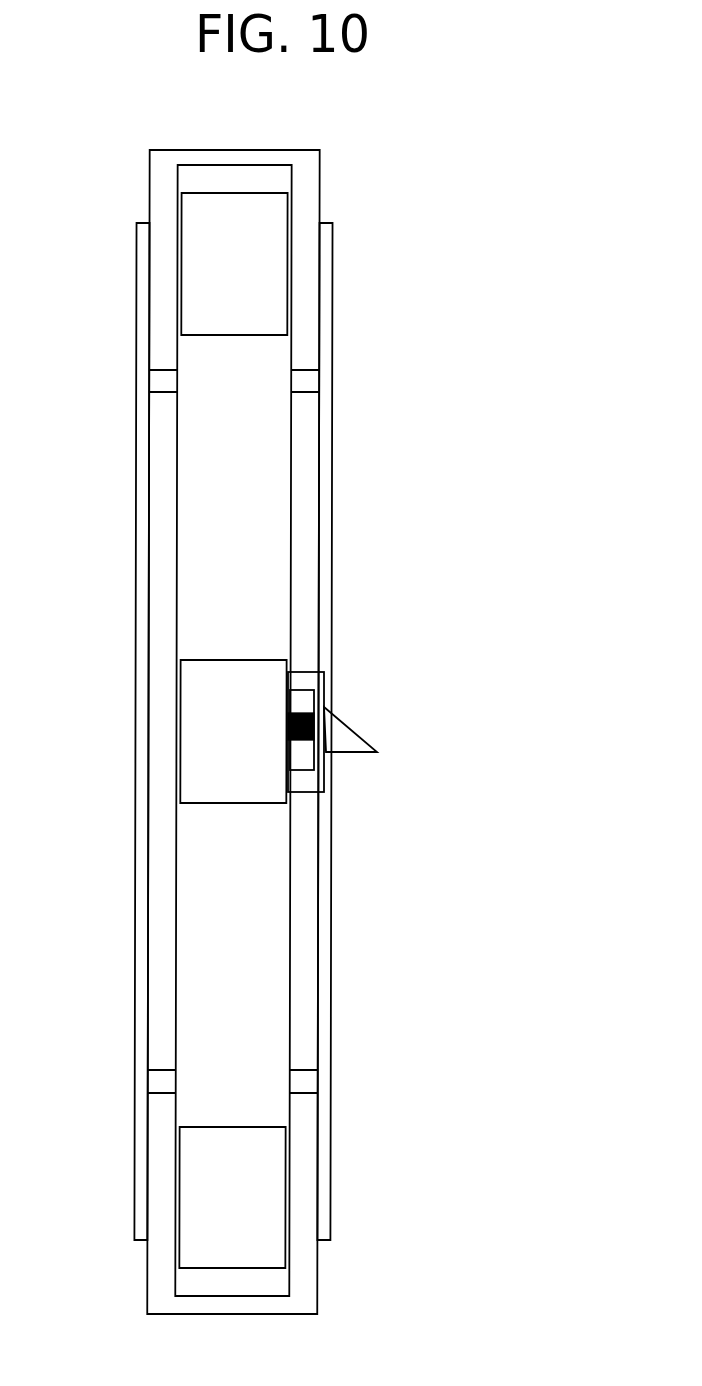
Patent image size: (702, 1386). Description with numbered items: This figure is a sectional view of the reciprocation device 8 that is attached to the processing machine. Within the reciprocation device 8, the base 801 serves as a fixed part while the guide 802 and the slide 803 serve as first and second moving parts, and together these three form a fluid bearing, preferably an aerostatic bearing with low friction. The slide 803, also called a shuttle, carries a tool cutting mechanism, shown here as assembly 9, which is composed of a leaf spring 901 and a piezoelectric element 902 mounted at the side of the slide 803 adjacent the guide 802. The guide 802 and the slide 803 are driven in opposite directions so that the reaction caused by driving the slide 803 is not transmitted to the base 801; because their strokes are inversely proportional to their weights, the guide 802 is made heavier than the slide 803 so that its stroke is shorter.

The reciprocation device 8 is at (432, 290).
The base 801 is at (217, 273).
The guide 802 is at (300, 558).
The slide 803 is at (265, 675).
The connector 9 is at (387, 749).
The leaf spring 901 is at (320, 696).
The piezoelectric element 902 is at (310, 738).